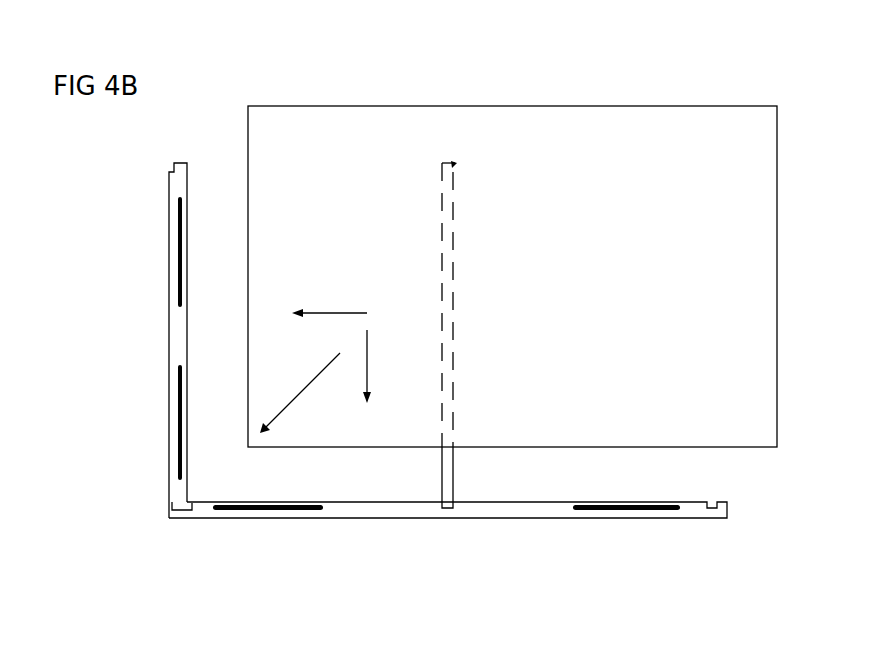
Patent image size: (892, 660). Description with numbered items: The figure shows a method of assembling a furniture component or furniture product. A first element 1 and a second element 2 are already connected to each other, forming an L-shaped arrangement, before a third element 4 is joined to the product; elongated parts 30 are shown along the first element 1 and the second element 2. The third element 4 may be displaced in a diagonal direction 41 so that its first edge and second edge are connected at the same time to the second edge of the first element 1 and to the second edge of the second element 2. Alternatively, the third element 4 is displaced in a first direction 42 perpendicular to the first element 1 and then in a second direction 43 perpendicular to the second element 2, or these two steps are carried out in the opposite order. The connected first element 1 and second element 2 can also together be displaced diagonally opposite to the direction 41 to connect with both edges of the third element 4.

The first element 1 is at (490, 507).
The second element 2 is at (180, 338).
The elongated elements 30 is at (180, 245).
The third element 4 is at (520, 305).
The diagonal direction 41 is at (300, 393).
The first direction 42 is at (388, 366).
The second direction 43 is at (329, 294).